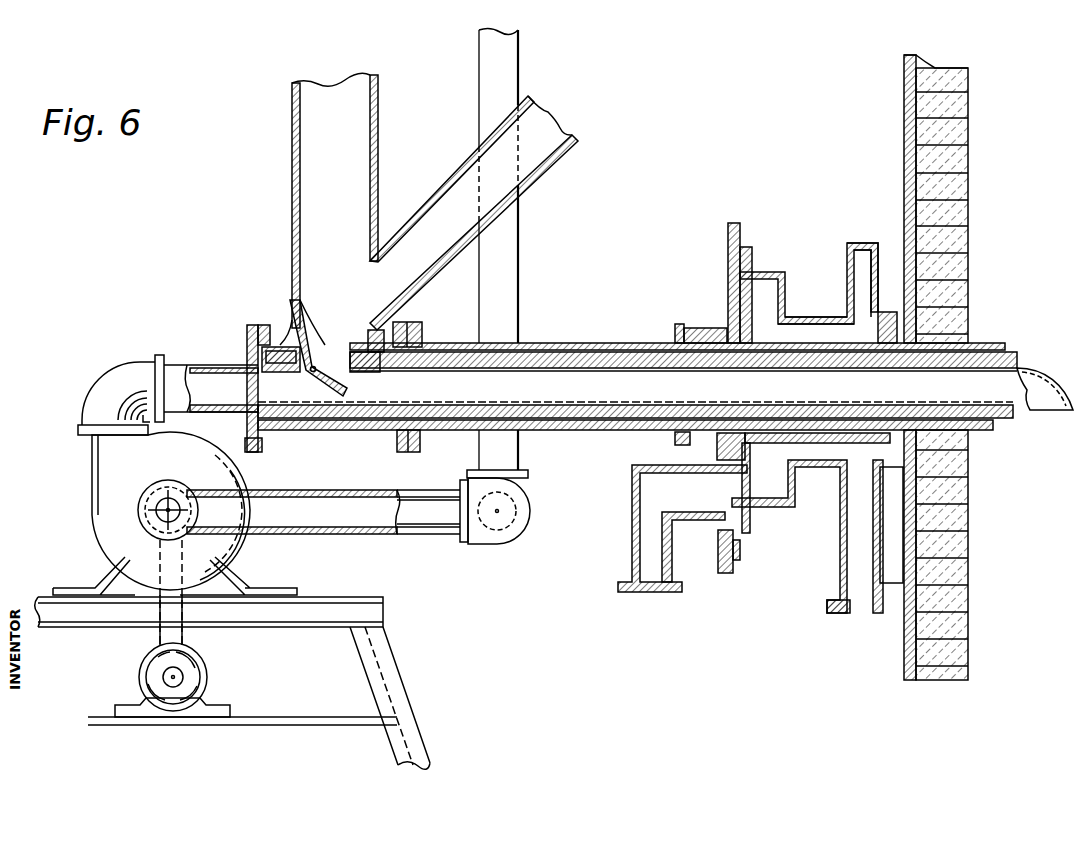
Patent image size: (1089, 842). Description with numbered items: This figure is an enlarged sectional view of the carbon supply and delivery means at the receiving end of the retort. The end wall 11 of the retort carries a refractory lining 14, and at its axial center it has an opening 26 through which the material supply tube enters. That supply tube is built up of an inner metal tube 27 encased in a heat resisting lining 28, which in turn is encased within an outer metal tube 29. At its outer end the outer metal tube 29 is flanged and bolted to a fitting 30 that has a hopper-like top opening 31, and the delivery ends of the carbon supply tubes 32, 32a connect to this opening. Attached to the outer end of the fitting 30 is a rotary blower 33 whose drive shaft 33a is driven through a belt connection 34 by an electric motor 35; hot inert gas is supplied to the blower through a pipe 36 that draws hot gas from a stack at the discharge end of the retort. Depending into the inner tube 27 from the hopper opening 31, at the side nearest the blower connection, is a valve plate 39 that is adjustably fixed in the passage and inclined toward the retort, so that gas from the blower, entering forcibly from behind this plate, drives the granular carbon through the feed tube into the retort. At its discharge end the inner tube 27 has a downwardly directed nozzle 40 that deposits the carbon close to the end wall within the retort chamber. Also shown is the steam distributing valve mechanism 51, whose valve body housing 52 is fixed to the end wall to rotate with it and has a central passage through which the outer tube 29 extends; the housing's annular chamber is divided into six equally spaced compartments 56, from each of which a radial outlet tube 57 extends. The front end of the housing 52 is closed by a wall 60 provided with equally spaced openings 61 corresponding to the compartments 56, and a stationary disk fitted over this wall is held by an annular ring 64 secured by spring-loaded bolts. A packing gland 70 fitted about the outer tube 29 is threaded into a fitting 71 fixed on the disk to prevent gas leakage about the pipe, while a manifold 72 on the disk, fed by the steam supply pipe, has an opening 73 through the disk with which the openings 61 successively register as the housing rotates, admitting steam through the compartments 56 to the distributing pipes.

The end wall 11 is at (904, 160).
The refractory lining 14 is at (968, 212).
The opening 26 is at (975, 316).
The inner metal tube 27 is at (548, 345).
The heat resisting lining 28 is at (640, 350).
The outer metal tube 29 is at (592, 345).
The fitting 30 is at (362, 430).
The hopper-like top opening 31 is at (330, 350).
The carbon supply tube 32 is at (292, 150).
The carbon supply tube 32a is at (545, 168).
The rotary blower 33 is at (105, 466).
The drive shaft 33a is at (150, 508).
The belt connection 34 is at (158, 628).
The electric motor 35 is at (210, 666).
The pipe 36 is at (481, 52).
The valve plate 39 is at (305, 430).
The nozzle 40 is at (1033, 385).
The distributing valve mechanism 51 is at (716, 268).
The valve body housing 52 is at (768, 512).
The compartments 56 is at (770, 490).
The radial outlet tube 57 is at (843, 252).
The wall 60 is at (765, 318).
The openings 61 is at (752, 278).
The annular ring 64 is at (718, 565).
The packing gland 70 is at (675, 440).
The fitting 71 is at (700, 325).
The manifold 72 is at (632, 520).
The opening 73 is at (713, 507).